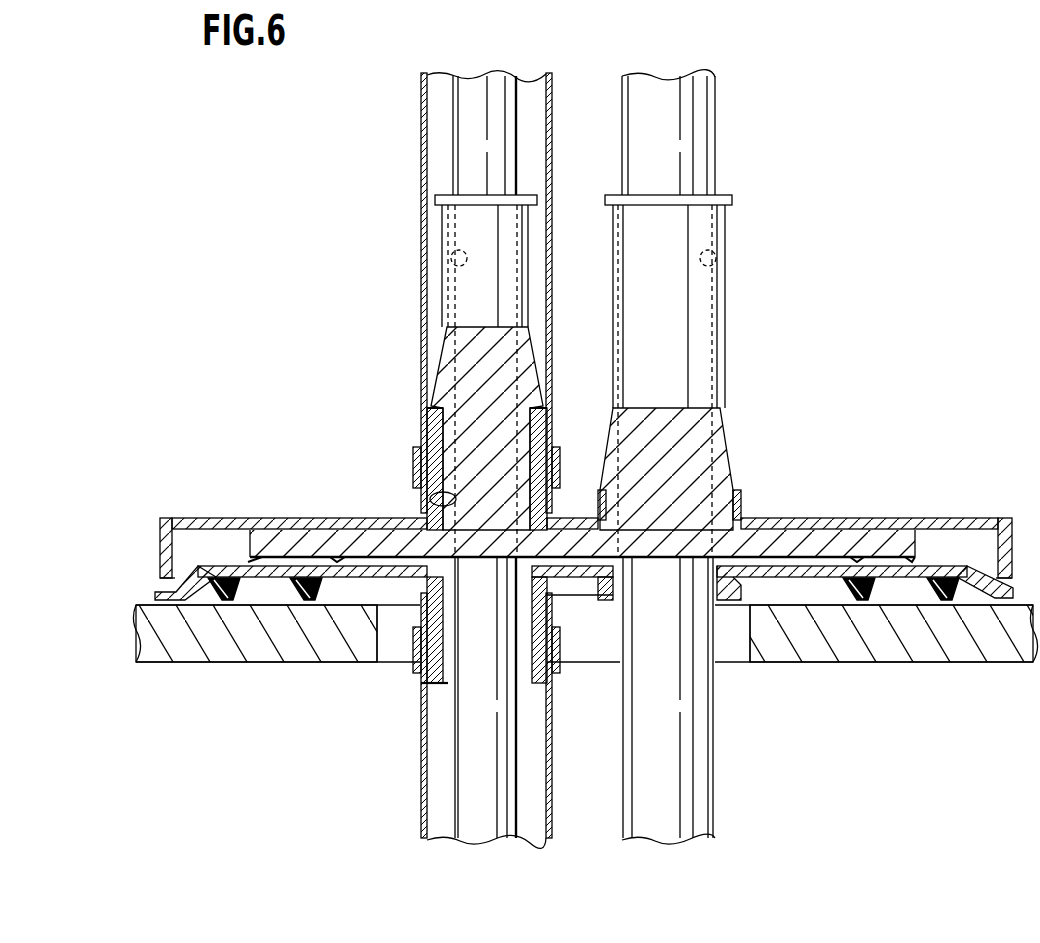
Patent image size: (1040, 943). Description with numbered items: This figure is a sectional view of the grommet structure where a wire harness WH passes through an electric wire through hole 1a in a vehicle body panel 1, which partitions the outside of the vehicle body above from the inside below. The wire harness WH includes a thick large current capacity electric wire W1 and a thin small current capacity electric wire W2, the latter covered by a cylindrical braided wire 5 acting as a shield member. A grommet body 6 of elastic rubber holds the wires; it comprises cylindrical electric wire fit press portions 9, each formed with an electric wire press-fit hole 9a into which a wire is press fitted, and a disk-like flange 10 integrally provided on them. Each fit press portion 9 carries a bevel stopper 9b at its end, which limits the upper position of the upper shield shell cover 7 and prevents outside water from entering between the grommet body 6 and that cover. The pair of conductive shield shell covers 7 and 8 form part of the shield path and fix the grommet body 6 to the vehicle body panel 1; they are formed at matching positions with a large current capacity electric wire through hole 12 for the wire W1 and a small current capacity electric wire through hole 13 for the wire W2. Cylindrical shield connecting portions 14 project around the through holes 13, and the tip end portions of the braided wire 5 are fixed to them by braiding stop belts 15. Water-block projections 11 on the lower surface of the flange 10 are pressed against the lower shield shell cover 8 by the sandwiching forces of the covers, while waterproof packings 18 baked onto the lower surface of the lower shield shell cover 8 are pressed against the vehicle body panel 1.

The vehicle body panel 1 is at (985, 655).
The electric wire through hole 1a is at (742, 632).
The braided wire 5 is at (420, 100).
The grommet body 6 is at (733, 416).
The upper shield shell cover 7 is at (950, 519).
The lower shield shell cover 8 is at (984, 536).
The electric wire fit press portion 9 is at (450, 315).
The electric wire press-fit hole 9a is at (451, 262).
The bevel stopper 9b is at (432, 398).
The flange 10 is at (799, 545).
The water-block projection 11 is at (333, 560).
The large current capacity electric wire through hole 12 is at (743, 499).
The small current capacity electric wire through hole 13 is at (430, 499).
The shield connecting portion 14 is at (430, 418).
The braiding stop belt 15 is at (413, 463).
The waterproof packing 18 is at (302, 600).
The large current capacity electric wire W1 is at (656, 95).
The small current capacity electric wire W2 is at (476, 95).
The wire harness WH is at (727, 118).